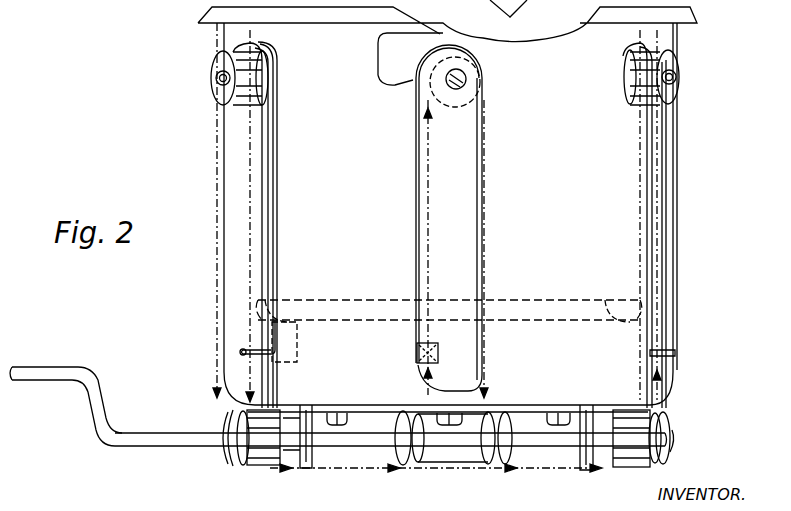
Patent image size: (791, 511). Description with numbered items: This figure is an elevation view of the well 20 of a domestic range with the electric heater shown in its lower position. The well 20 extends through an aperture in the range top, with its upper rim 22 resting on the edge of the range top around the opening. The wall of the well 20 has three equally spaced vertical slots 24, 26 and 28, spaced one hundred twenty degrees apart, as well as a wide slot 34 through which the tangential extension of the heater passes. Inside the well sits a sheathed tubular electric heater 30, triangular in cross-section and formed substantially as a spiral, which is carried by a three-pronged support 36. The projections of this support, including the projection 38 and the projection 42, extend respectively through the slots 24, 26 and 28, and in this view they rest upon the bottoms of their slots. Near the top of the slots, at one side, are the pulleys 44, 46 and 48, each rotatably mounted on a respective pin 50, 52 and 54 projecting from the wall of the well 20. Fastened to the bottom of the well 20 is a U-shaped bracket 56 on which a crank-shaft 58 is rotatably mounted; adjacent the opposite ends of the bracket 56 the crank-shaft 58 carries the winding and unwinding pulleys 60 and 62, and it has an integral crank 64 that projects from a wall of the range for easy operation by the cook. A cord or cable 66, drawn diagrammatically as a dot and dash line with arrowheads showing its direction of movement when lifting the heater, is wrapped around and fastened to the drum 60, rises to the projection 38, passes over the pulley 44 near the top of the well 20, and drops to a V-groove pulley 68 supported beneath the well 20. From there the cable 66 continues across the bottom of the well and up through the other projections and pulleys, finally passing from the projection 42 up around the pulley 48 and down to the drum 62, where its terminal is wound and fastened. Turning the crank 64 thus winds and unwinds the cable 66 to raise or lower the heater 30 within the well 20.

The well 20 is at (675, 213).
The upper rim 22 is at (475, 42).
The vertical slot 24 is at (273, 167).
The vertical slot 26 is at (413, 80).
The vertical slot 28 is at (650, 235).
The sheathed tubular electric heater 30 is at (373, 300).
The wide slot 34 is at (478, 148).
The three-pronged support 36 is at (518, 337).
The projection 38 is at (243, 352).
The projection 42 is at (415, 358).
The pulley 44 is at (215, 97).
The pulley 46 is at (485, 112).
The pulley 48 is at (672, 95).
The pin 50 is at (218, 78).
The pin 52 is at (472, 88).
The pin 54 is at (683, 79).
The U-shaped bracket 56 is at (312, 457).
The crank-shaft 58 is at (457, 453).
The winding pulley 60 is at (267, 470).
The unwinding pulley 62 is at (617, 472).
The crank 64 is at (28, 382).
The cord or cable 66 is at (662, 145).
The V-groove pulley 68 is at (237, 470).